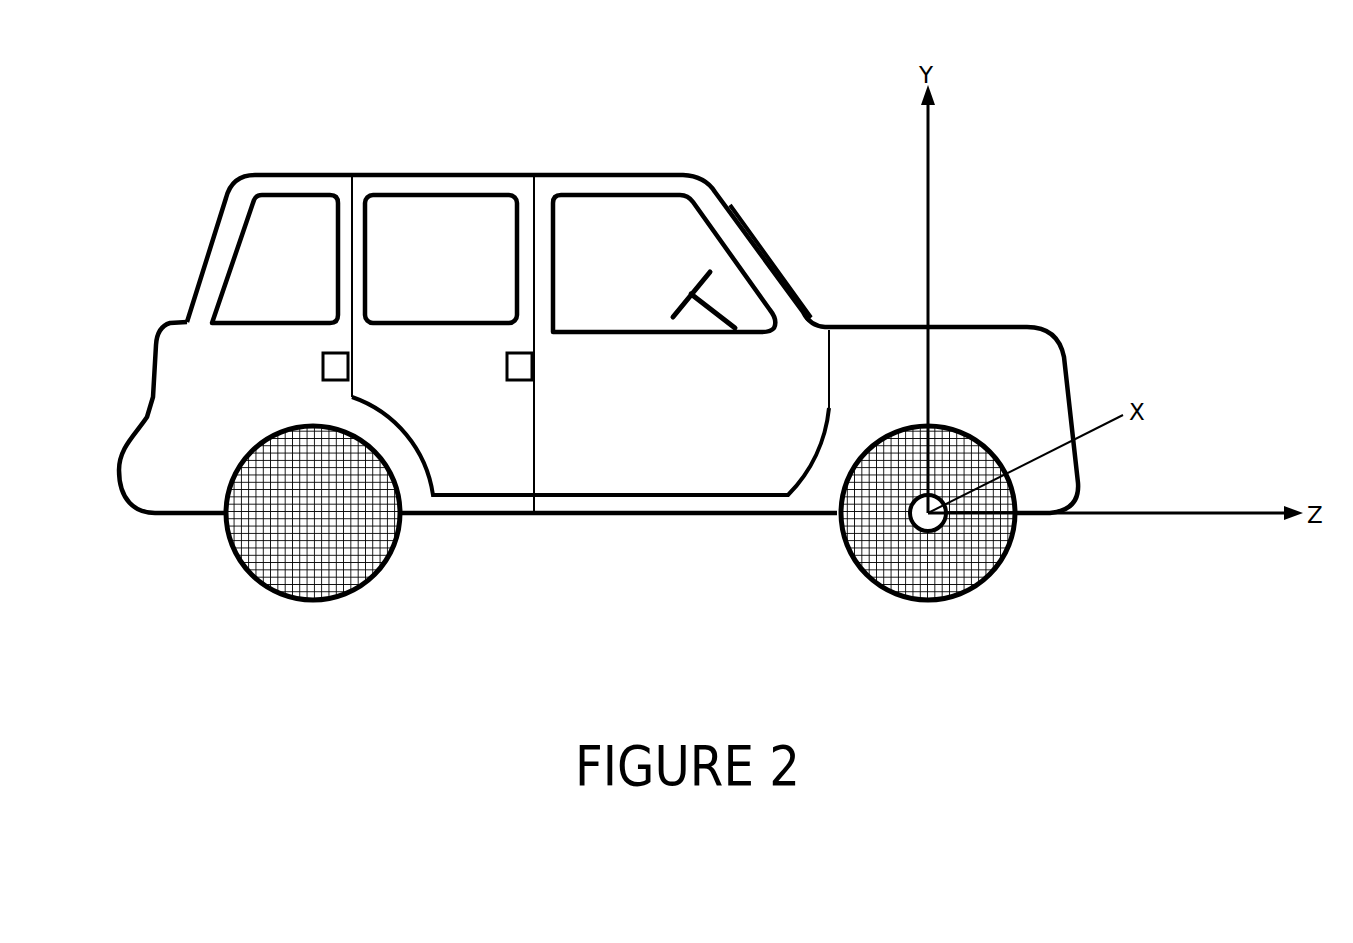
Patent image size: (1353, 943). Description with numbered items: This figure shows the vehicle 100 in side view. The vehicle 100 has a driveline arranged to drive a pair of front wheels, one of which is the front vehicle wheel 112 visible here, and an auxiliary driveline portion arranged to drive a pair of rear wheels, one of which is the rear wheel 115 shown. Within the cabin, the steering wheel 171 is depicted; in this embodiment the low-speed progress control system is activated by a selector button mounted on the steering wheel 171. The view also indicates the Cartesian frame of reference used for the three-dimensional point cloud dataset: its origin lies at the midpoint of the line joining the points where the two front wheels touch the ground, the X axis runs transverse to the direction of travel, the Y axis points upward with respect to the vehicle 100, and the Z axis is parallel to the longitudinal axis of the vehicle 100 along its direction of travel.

The vehicle 100 is at (1120, 325).
The front vehicle wheel 112 is at (935, 560).
The rear wheel 115 is at (315, 556).
The steering wheel 171 is at (692, 287).